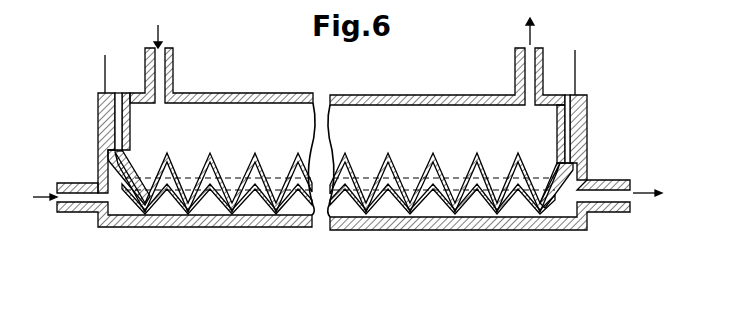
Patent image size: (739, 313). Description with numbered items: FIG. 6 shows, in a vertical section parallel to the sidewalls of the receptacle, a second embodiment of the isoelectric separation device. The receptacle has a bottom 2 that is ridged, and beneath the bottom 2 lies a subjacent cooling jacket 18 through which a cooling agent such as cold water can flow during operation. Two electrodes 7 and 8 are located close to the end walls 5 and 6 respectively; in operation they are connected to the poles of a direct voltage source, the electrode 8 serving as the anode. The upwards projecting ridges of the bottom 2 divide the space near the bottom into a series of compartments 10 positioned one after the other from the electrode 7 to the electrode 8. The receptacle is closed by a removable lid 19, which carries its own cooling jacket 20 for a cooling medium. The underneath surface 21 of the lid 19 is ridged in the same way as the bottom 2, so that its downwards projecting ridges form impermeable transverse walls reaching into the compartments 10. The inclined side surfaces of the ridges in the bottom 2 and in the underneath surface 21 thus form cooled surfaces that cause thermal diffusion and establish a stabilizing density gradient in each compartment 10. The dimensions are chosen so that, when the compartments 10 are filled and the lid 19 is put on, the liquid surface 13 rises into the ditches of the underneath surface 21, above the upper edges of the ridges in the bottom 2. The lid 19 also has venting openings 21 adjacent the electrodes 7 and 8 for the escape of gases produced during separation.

The bottom 2 is at (232, 212).
The end wall 5 is at (103, 177).
The end wall 6 is at (588, 180).
The electrode 7 is at (108, 158).
The electrode 8 is at (588, 162).
The compartments 10 is at (337, 198).
The liquid surface 13 is at (212, 158).
The cooling jacket 18 is at (384, 217).
The lid 19 is at (268, 100).
The cooling jacket 20 is at (415, 113).
The underneath surface of the lid 21 is at (122, 93).